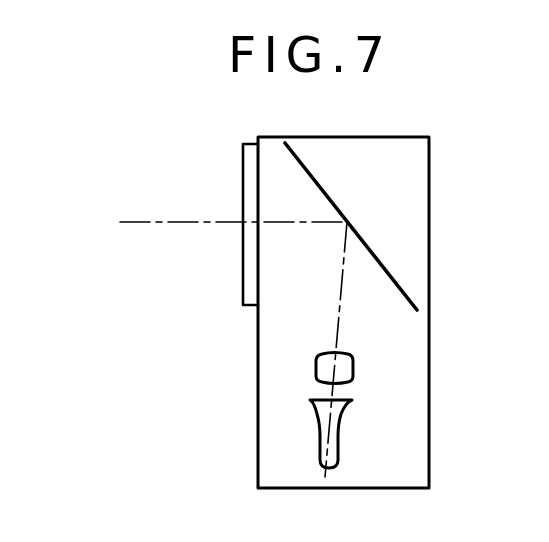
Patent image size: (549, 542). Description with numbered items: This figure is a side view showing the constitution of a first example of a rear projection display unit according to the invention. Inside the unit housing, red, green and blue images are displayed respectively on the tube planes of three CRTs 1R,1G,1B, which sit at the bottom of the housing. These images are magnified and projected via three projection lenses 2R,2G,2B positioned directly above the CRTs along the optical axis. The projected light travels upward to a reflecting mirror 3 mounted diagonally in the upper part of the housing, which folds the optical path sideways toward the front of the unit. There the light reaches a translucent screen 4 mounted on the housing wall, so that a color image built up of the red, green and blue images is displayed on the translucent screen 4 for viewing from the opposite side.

The translucent screen 4 is at (243, 193).
The reflecting mirror 3 is at (390, 272).
The projection lenses 2R,2G,2B is at (315, 377).
The CRTs 1R,1G,1B is at (318, 437).